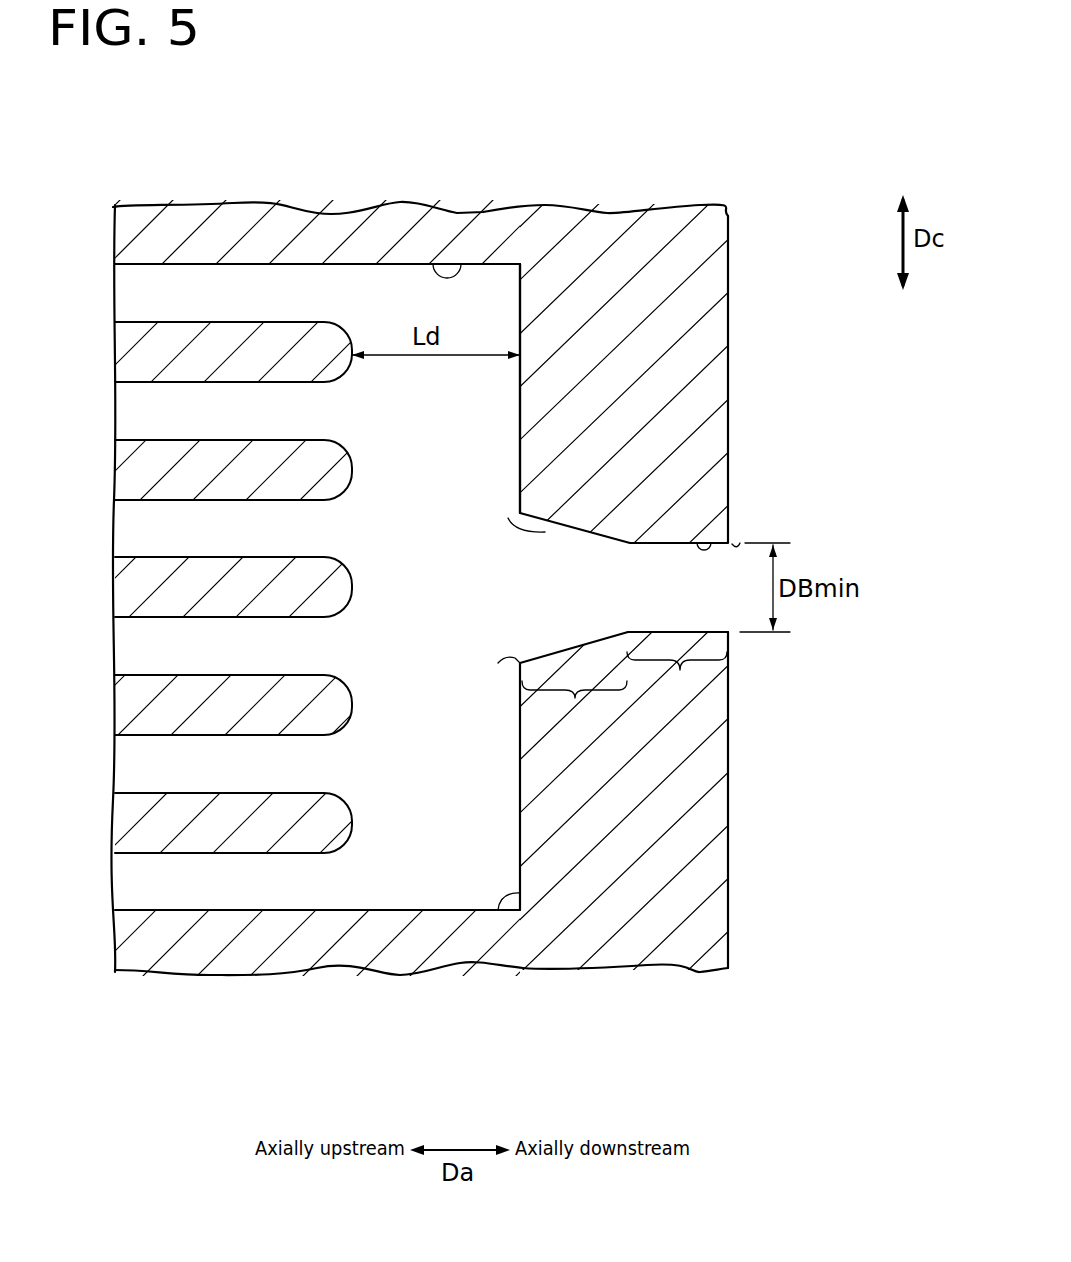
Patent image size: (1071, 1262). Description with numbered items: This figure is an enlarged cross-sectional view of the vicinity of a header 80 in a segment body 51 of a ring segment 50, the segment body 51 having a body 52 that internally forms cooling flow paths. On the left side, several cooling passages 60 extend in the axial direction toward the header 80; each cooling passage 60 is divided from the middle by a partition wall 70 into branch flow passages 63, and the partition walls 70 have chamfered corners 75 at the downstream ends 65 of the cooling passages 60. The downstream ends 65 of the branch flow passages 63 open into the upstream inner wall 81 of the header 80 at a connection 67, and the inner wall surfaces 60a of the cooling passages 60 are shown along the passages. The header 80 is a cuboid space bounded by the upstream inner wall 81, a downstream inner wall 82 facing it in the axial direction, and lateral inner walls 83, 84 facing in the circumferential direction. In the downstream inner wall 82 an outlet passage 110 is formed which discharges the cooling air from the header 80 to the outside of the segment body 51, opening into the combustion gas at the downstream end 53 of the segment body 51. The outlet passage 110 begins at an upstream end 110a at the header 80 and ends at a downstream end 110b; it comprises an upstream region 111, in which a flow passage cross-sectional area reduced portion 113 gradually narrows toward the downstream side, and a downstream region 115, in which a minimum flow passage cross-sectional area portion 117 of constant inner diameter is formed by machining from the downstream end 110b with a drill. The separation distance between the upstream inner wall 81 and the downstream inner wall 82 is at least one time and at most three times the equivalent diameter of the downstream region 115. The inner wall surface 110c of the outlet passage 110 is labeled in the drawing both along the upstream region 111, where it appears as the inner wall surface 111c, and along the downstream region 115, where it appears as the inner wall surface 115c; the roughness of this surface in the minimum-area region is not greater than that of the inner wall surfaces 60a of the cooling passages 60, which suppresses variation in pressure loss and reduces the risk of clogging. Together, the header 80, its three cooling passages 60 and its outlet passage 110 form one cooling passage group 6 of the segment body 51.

The cooling passage group 6 is at (483, 318).
The ring segment 50 is at (478, 318).
The segment body 51 is at (478, 318).
The body 52 is at (712, 277).
The downstream end 53 is at (728, 227).
The cooling passage 60 is at (233, 609).
The inner wall surface 60a is at (160, 850).
The branch flow passage 63 is at (208, 527).
The downstream end 65 is at (333, 532).
The connection 67 is at (337, 648).
The partition wall 70 is at (138, 590).
The chamfered corner 75 is at (340, 793).
The header 80 is at (456, 830).
The upstream inner wall 81 is at (372, 264).
The downstream inner wall 82 is at (520, 296).
The lateral inner wall 83 is at (457, 258).
The lateral inner wall 84 is at (530, 893).
The outlet passage 110 is at (646, 735).
The upstream end 110a is at (498, 663).
The downstream end 110b is at (740, 543).
The inner wall surface 110c is at (634, 472).
The upstream region 111 is at (574, 771).
The first face corner 111c is at (508, 518).
The flow passage cross-sectional area reduced portion 113 is at (547, 592).
The downstream region 115 is at (677, 669).
The inner wall surface 115c is at (713, 547).
The minimum flow passage cross-sectional area portion 117 is at (683, 588).